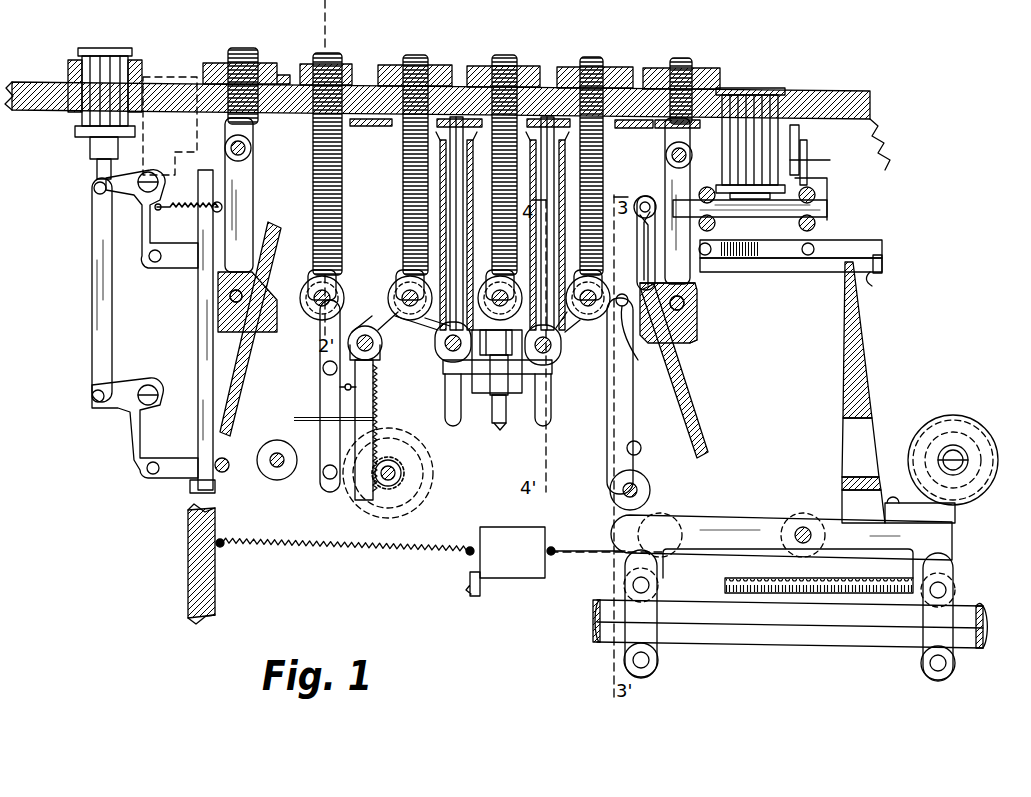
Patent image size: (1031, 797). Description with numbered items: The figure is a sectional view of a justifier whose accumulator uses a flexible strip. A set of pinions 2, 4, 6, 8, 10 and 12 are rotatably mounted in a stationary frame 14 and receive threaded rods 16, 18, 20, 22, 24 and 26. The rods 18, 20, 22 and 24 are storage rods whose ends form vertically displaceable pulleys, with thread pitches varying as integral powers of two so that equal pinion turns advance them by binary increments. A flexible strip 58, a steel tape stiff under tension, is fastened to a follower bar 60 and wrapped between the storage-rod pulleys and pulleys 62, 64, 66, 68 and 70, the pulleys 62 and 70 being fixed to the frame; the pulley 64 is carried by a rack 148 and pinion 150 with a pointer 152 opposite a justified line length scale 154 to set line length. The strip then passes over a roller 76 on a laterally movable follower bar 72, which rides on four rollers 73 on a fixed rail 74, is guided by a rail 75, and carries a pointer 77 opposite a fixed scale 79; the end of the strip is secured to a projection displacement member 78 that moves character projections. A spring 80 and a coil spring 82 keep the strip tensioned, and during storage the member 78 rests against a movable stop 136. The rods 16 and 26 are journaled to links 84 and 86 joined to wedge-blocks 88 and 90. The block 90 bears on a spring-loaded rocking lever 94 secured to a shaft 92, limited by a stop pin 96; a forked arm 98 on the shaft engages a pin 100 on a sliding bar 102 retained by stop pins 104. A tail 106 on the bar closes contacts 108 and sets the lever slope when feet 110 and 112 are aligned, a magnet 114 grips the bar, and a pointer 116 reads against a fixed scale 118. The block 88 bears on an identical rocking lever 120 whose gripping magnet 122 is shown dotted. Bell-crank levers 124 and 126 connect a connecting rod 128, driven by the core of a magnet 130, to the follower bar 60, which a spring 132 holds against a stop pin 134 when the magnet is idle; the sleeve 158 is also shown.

The pinion 2 is at (262, 68).
The pinion 4 is at (356, 78).
The pinion 6 is at (446, 78).
The pinion 8 is at (532, 78).
The pinion 10 is at (620, 78).
The pinion 12 is at (712, 78).
The stationary frame 14 is at (845, 90).
The threaded rod 16 is at (240, 52).
The storage rod 18 is at (334, 56).
The storage rod 20 is at (418, 56).
The storage rod 22 is at (506, 56).
The storage rod 24 is at (595, 58).
The threaded rod 26 is at (684, 58).
The flexible strip 58 is at (607, 452).
The follower bar 60 is at (198, 346).
The pulley 62 is at (277, 480).
The pulley 64 is at (382, 352).
The pulley 66 is at (440, 343).
The pulley 68 is at (556, 355).
The pulley 70 is at (645, 490).
The follower bar 72 is at (845, 384).
The rollers 73 is at (657, 582).
The fixed rail 74 is at (800, 645).
The rail 75 is at (880, 288).
The roller 76 is at (810, 520).
The pointer 77 is at (912, 562).
The projection displacement member 78 is at (530, 578).
The fixed scale 79 is at (819, 575).
The spring 80 is at (318, 540).
The coil spring 82 is at (935, 420).
The link 84 is at (252, 176).
The link 86 is at (665, 158).
The wedge-block 88 is at (218, 309).
The wedge-block 90 is at (700, 314).
The shaft 92 is at (658, 290).
The rocking lever 94 is at (678, 406).
The stop pin 96 is at (638, 442).
The forked arm 98 is at (636, 243).
The pin 100 is at (647, 202).
The sliding bar 102 is at (802, 210).
The stop pins 104 is at (816, 230).
The tail 106 is at (827, 184).
The contacts 108 is at (817, 155).
The foot 110 is at (698, 340).
The foot 112 is at (698, 285).
The magnet 114 is at (755, 90).
The pointer 116 is at (725, 220).
The fixed scale 118 is at (815, 250).
The rocking lever 120 is at (247, 386).
The gripping magnet 122 is at (170, 77).
The bell-crank lever 124 is at (160, 235).
The bell-crank lever 126 is at (142, 432).
The connecting rod 128 is at (92, 207).
The magnet 130 is at (90, 120).
The spring 132 is at (188, 214).
The stop pin 134 is at (232, 454).
The movable stop 136 is at (470, 585).
The rack 148 is at (374, 418).
The pinion 150 is at (405, 474).
The pointer 152 is at (358, 393).
The justified line length scale 154 is at (320, 410).
The sleeve 158 is at (492, 418).